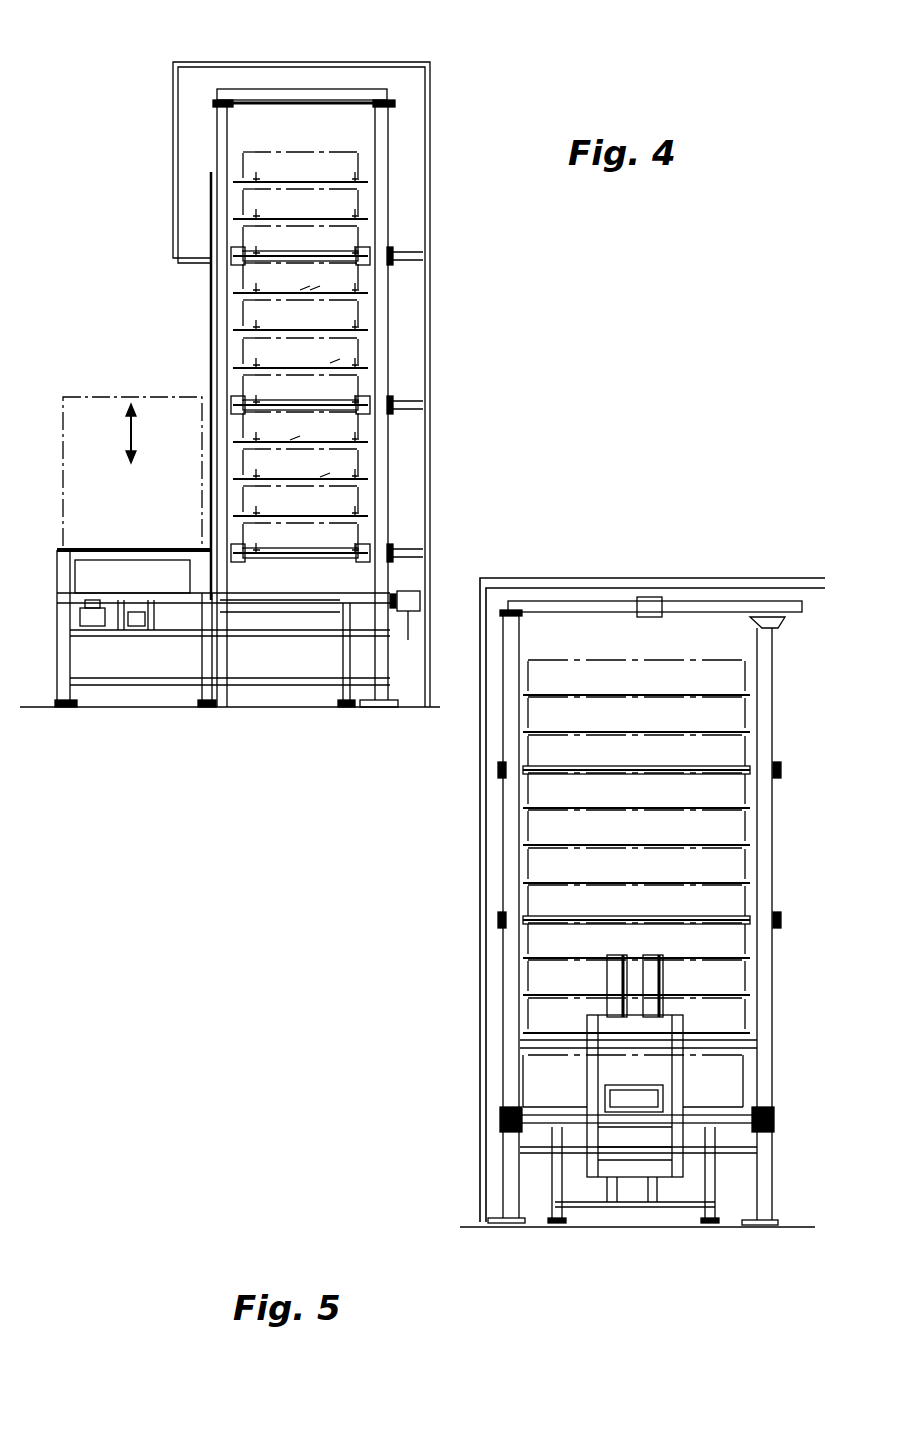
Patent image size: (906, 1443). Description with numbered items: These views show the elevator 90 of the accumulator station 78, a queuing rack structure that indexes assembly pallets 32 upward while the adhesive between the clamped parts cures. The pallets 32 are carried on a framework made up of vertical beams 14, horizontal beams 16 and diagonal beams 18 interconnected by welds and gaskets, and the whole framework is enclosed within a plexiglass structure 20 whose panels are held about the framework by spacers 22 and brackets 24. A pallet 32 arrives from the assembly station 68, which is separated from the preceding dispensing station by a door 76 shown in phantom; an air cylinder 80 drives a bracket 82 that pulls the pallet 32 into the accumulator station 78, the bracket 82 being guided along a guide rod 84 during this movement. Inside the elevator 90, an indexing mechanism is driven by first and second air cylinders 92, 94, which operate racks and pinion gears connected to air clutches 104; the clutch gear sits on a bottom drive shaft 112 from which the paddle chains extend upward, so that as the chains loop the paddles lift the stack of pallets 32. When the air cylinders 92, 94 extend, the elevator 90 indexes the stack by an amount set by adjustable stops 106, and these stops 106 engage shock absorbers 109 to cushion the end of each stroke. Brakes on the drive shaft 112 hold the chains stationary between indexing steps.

In FIG. 4, the vertical beams 14 is at (78, 700).
In FIG. 5, the vertical beams 14 is at (730, 640).
In FIG. 4, the horizontal beams 16 is at (390, 100).
In FIG. 5, the horizontal beams 16 is at (785, 622).
In FIG. 4, the diagonal beams 18 is at (360, 385).
In FIG. 5, the diagonal beams 18 is at (638, 883).
In FIG. 4, the plexiglass structure 20 is at (432, 58).
In FIG. 5, the plexiglass structure 20 is at (722, 578).
In FIG. 4, the spacers 22 is at (398, 250).
In FIG. 5, the spacers 22 is at (522, 600).
In FIG. 4, the brackets 24 is at (425, 258).
In FIG. 5, the brackets 24 is at (490, 605).
In FIG. 4, the assembly pallet 32 is at (60, 567).
In FIG. 4, the assembly station 68 is at (140, 622).
In FIG. 4, the door 76 is at (63, 432).
In FIG. 4, the accumulator station 78 is at (300, 615).
In FIG. 4, the air cylinder 80 is at (100, 630).
In FIG. 4, the bracket 82 is at (72, 606).
In FIG. 4, the guide rod 84 is at (172, 620).
In FIG. 4, the elevator 90 is at (296, 60).
In FIG. 5, the elevator 90 is at (565, 1105).
In FIG. 5, the first air cylinder 92 is at (607, 975).
In FIG. 5, the second air cylinder 94 is at (663, 975).
In FIG. 4, the air clutches 104 is at (423, 688).
In FIG. 5, the adjustable stops 106 is at (680, 1150).
In FIG. 5, the shock absorbers 109 is at (650, 1200).
In FIG. 5, the bottom drive shaft 112 is at (505, 1120).